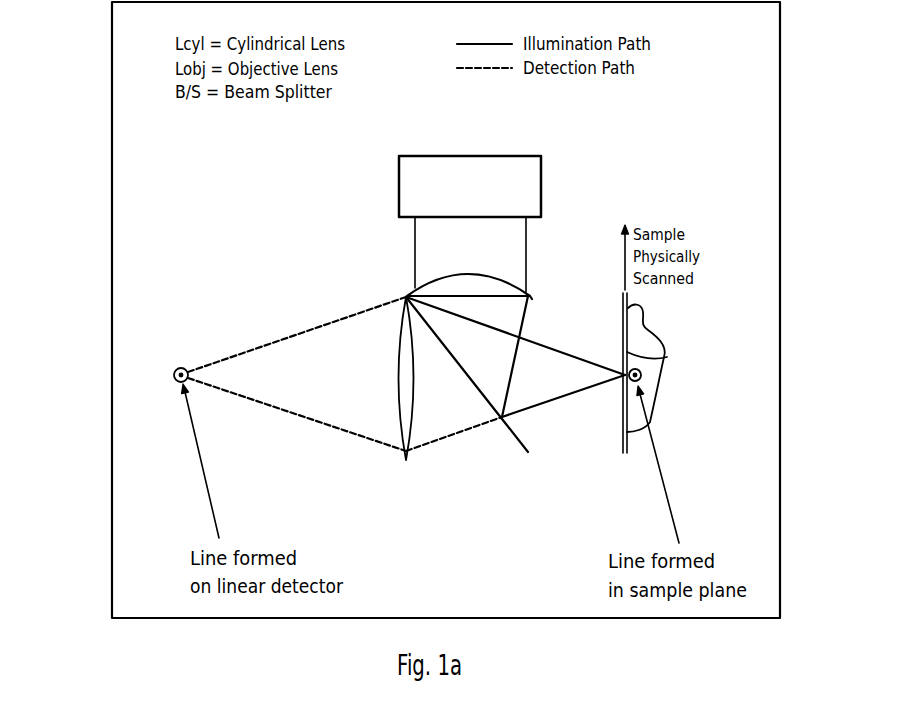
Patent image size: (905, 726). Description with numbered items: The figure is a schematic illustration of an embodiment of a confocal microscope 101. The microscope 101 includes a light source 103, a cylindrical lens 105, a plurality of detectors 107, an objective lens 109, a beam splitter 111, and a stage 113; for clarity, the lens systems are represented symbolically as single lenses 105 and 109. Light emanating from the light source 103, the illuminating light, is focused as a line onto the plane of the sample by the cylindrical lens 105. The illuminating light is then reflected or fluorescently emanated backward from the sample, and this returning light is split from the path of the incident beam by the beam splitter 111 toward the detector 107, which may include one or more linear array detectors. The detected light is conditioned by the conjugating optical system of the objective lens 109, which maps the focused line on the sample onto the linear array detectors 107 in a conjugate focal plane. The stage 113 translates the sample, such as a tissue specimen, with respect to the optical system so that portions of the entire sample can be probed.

The confocal microscope 101 is at (103, 110).
The light source 103 is at (541, 188).
The cylindrical lens 105 is at (407, 295).
The detectors 107 is at (168, 372).
The objective lens 109 is at (407, 460).
The beam splitter 111 is at (547, 470).
The stage 113 is at (667, 357).